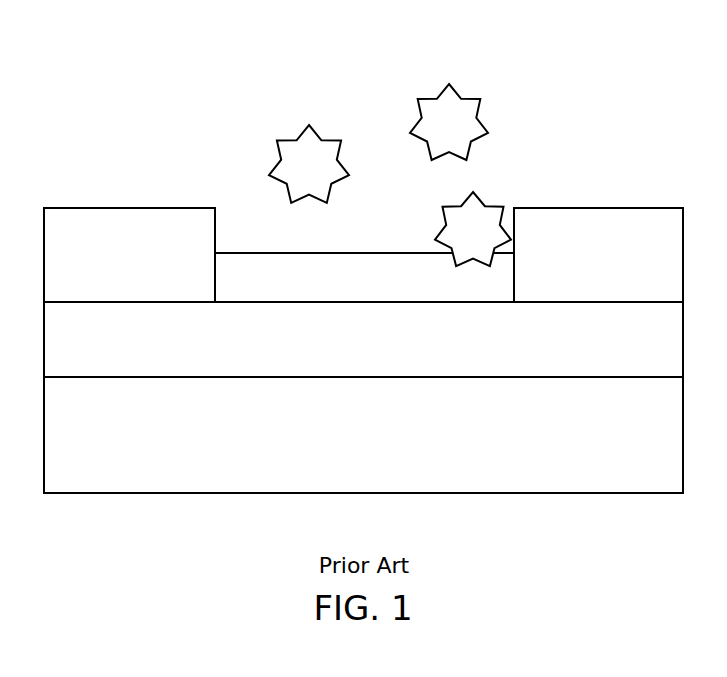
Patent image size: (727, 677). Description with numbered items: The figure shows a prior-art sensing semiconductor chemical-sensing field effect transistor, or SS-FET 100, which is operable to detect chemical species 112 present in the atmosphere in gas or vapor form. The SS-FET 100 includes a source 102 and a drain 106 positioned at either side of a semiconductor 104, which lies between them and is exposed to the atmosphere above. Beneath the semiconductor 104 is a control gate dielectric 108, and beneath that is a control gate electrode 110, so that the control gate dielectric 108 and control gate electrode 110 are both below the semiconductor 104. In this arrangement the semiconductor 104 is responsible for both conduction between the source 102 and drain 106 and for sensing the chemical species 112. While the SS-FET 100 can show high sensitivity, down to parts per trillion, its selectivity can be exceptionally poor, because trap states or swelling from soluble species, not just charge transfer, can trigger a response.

The sensing semiconductor chemical-sensing field effect transistor 100 is at (125, 100).
The source 102 is at (108, 282).
The semiconductor 104 is at (471, 289).
The drain 106 is at (578, 282).
The control gate dielectric 108 is at (515, 352).
The control gate electrode 110 is at (516, 448).
The chemical species 112 is at (480, 98).